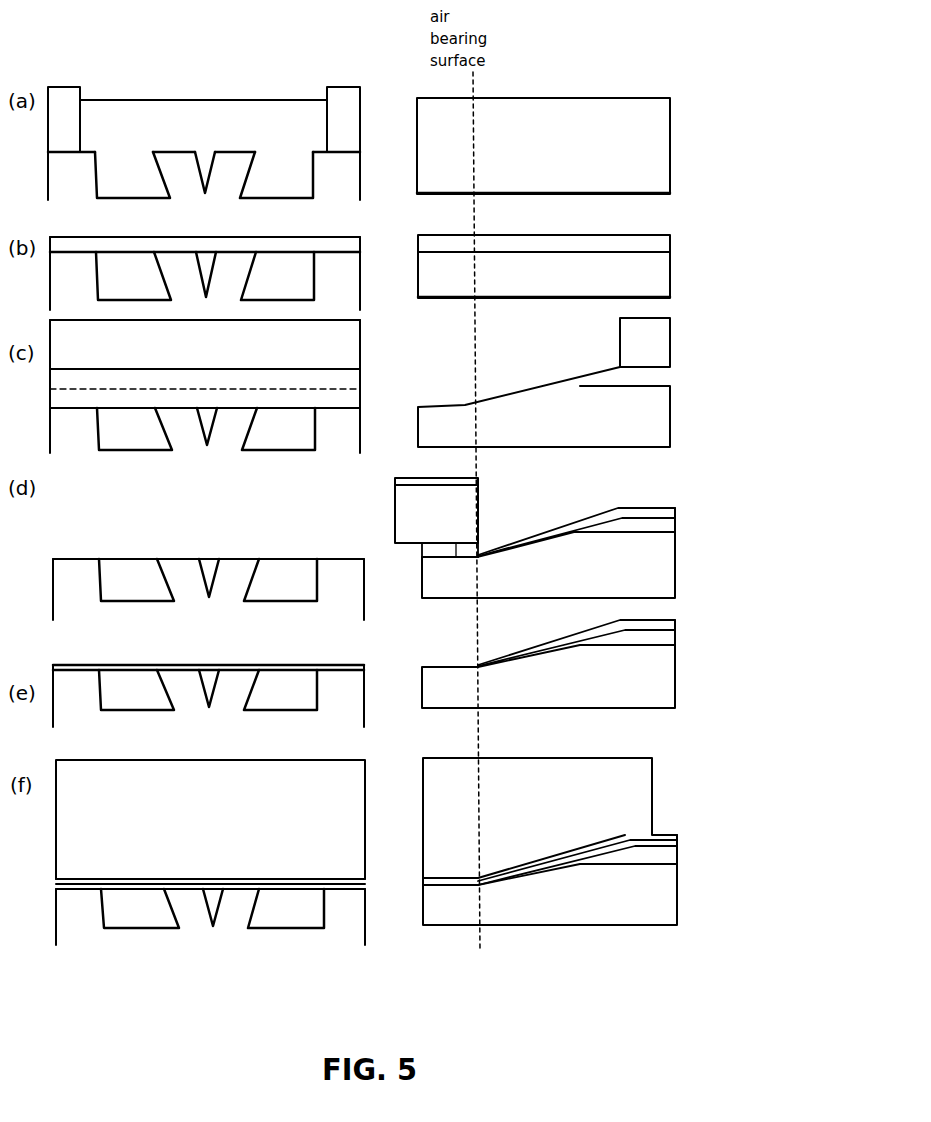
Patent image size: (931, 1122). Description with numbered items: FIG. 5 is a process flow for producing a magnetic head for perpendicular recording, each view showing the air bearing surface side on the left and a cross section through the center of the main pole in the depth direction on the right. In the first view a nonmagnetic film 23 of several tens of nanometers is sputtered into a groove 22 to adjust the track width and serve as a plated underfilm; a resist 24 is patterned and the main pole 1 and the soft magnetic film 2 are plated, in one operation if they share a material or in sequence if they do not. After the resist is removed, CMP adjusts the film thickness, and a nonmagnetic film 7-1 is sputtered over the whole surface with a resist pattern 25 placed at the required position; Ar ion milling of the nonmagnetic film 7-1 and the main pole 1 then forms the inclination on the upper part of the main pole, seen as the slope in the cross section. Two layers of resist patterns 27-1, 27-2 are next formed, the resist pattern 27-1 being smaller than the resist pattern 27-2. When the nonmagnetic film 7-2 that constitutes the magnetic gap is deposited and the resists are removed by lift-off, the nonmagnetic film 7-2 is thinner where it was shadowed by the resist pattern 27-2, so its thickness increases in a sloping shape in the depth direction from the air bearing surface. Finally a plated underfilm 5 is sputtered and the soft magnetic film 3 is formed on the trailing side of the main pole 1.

The main pole 1 is at (210, 157).
The soft magnetic film 2 is at (277, 182).
The soft magnetic film 3 is at (432, 776).
The plated underfilm 5 is at (427, 878).
The nonmagnetic film 7-1 is at (305, 242).
The nonmagnetic film (magnetic gap film) 7-2 is at (552, 535).
The groove 22 is at (300, 175).
The nonmagnetic film 23 is at (97, 170).
The resist 24 is at (65, 98).
The resist pattern 25 is at (350, 345).
The resist pattern 27-1 is at (397, 549).
The resist pattern 27-2 is at (395, 507).